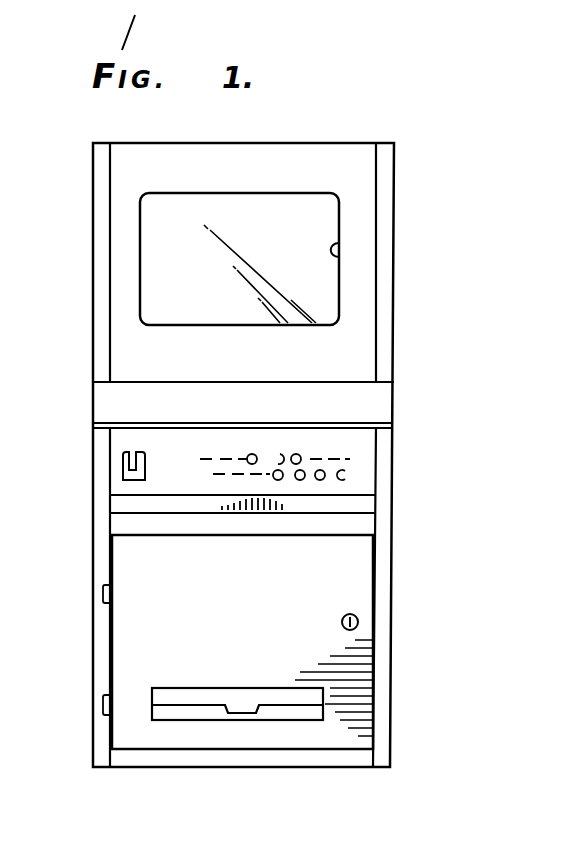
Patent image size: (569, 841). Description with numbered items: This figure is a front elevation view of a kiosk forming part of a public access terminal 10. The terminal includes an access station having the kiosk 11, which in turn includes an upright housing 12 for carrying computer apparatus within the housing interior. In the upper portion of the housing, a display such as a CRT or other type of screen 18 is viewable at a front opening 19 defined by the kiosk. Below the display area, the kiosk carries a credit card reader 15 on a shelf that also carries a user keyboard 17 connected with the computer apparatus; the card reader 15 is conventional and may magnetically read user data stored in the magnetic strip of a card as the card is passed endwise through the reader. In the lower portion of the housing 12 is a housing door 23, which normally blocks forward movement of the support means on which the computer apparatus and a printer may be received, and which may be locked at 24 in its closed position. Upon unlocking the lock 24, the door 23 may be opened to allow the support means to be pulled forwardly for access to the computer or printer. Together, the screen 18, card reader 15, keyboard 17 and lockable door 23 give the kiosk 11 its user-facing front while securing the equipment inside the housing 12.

The public access terminal 10 is at (416, 167).
The kiosk 11 is at (392, 340).
The upright housing 12 is at (97, 305).
The credit card reader 15 is at (123, 466).
The user keyboard 17 is at (299, 456).
The screen 18 is at (303, 218).
The front opening 19 is at (339, 257).
The housing door 23 is at (256, 624).
The lock 24 is at (357, 616).